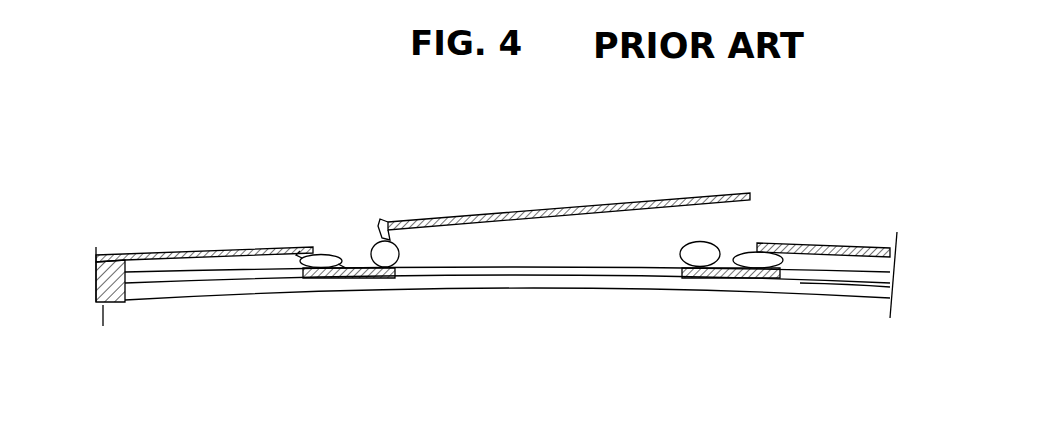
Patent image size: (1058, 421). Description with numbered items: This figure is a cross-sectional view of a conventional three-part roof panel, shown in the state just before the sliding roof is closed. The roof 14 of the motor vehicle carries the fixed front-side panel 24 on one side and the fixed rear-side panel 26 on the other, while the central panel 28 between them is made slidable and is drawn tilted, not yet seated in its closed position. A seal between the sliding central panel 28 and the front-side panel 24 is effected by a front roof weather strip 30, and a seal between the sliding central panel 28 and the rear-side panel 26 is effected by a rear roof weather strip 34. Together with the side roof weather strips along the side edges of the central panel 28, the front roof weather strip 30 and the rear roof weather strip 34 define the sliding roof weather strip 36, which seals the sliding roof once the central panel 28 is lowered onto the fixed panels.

The roof 14 is at (117, 307).
The front-side panel 24 is at (195, 250).
The rear-side panel 26 is at (840, 247).
The central panel 28 is at (611, 205).
The front roof weather strip 30 is at (353, 278).
The rear roof weather strip 34 is at (718, 278).
The sliding roof weather strip 36 is at (347, 238).